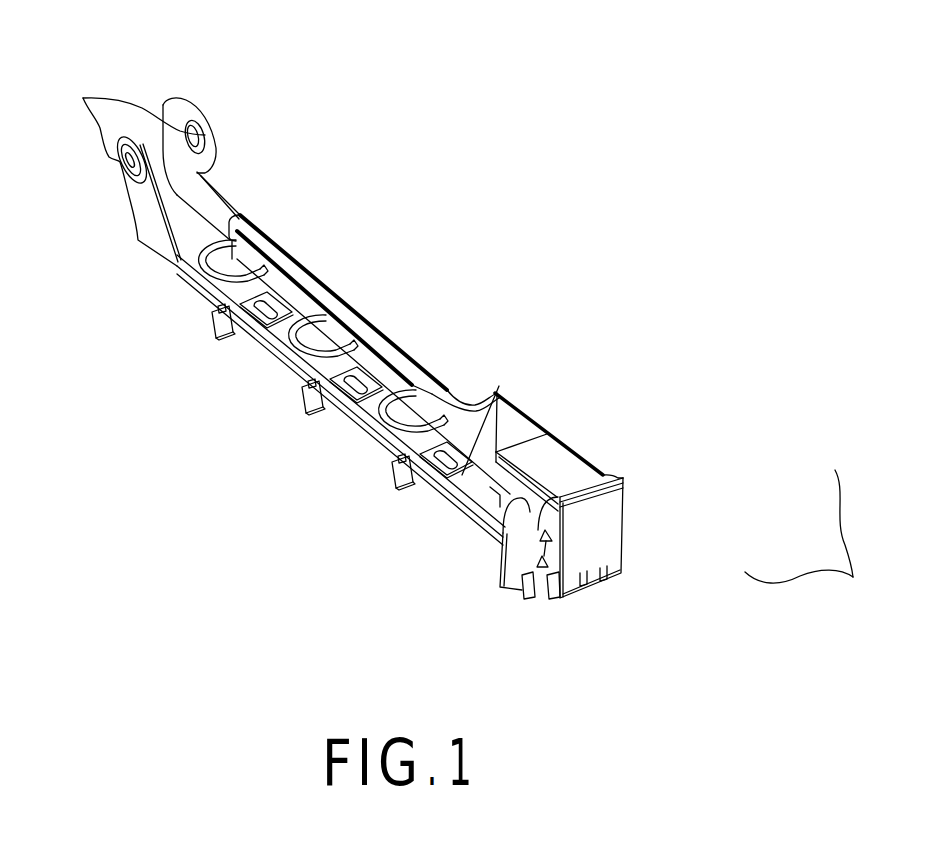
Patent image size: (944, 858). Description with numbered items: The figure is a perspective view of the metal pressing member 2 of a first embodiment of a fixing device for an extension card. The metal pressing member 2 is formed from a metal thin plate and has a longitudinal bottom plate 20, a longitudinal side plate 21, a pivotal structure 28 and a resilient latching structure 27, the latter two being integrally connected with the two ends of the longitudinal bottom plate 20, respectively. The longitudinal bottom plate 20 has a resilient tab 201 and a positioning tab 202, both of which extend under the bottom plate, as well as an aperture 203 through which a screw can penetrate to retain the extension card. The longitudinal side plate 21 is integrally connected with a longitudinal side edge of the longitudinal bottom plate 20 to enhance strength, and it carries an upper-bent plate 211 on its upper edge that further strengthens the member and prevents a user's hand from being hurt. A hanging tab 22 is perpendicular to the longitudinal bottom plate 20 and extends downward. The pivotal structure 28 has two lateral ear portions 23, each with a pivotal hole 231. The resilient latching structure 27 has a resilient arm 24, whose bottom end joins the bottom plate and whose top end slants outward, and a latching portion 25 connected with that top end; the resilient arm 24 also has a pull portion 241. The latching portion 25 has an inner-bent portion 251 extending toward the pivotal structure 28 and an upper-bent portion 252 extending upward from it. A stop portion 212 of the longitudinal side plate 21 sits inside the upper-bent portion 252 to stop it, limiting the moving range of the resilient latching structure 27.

The metal pressing member 2 is at (659, 174).
The longitudinal bottom plate 20 is at (290, 300).
The resilient tab 201 is at (390, 473).
The positioning tab 202 is at (467, 530).
The aperture 203 is at (233, 265).
The longitudinal side plate 21 is at (482, 420).
The upper-bent plate 211 is at (357, 312).
The stop portion 212 is at (567, 470).
The hanging tab 22 is at (527, 592).
The lateral ear portions 23 is at (196, 198).
The pivotal hole 231 is at (84, 97).
The resilient arm 24 is at (600, 542).
The pull portion 241 is at (513, 563).
The latching portion 25 is at (782, 432).
The inner-bent portion 251 is at (608, 500).
The upper-bent portion 252 is at (603, 478).
The resilient latching structure 27 is at (817, 534).
The pivotal structure 28 is at (200, 110).